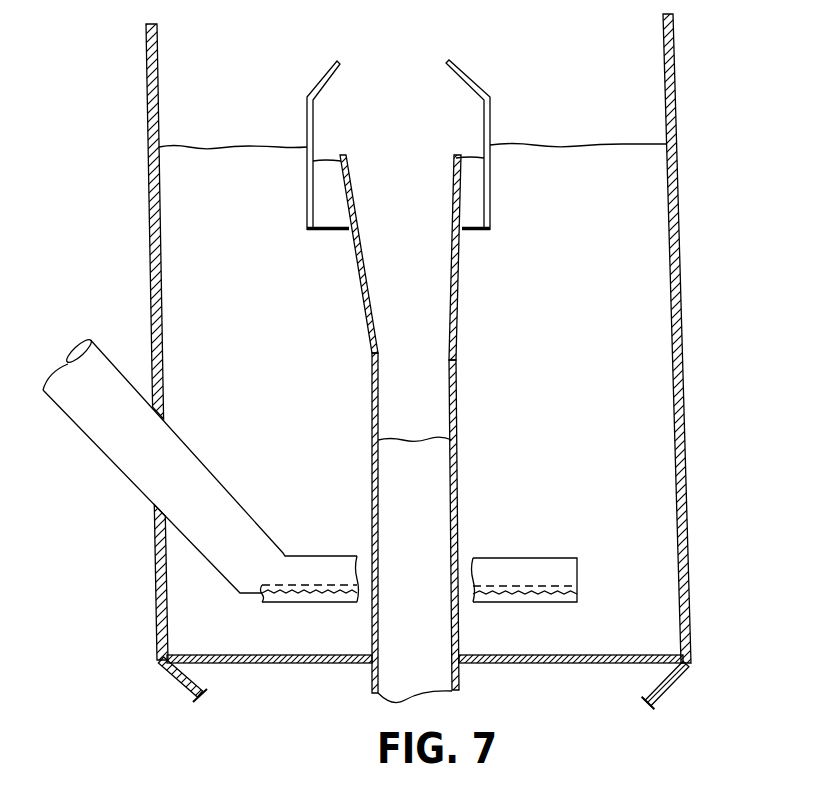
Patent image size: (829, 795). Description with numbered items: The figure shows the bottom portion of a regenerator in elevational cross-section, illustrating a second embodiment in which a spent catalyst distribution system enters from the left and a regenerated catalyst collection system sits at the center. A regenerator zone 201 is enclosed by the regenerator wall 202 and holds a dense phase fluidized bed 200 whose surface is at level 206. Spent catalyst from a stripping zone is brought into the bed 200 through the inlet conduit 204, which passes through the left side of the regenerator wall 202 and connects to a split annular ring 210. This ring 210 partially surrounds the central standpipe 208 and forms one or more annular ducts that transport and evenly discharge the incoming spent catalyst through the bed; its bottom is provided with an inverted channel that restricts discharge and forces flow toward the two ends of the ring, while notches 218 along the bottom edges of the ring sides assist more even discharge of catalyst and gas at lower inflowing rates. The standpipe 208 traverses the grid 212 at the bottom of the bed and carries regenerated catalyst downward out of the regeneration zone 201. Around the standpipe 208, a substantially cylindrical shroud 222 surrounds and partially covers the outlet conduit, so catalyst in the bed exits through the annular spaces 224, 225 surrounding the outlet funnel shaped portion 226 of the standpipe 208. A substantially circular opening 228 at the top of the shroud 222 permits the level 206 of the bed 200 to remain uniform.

The dense phase fluidized bed 200 is at (607, 347).
The regenerator zone 201 is at (146, 153).
The regenerator wall 202 is at (683, 375).
The inlet conduit 204 is at (110, 355).
The level 206 is at (567, 134).
The central standpipe 208 is at (460, 387).
The split annular ring 210 is at (510, 557).
The grid 212 is at (566, 655).
The notches 218 is at (308, 598).
The cylindrical shroud 222 is at (316, 86).
The annular space 224 is at (335, 218).
The annular space 225 is at (477, 218).
The outlet funnel shaped portion 226 is at (347, 200).
The circular opening 228 is at (419, 83).